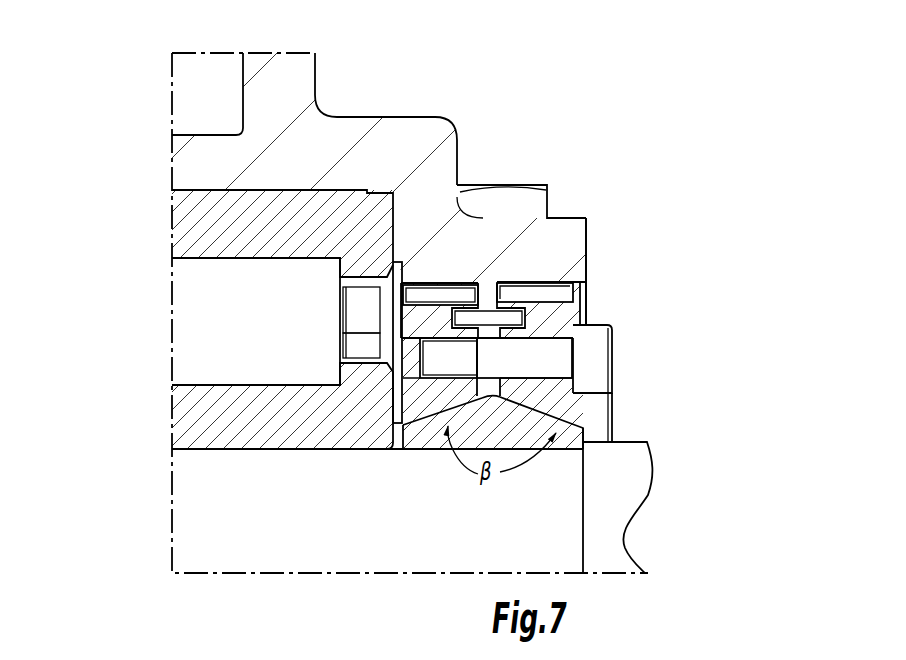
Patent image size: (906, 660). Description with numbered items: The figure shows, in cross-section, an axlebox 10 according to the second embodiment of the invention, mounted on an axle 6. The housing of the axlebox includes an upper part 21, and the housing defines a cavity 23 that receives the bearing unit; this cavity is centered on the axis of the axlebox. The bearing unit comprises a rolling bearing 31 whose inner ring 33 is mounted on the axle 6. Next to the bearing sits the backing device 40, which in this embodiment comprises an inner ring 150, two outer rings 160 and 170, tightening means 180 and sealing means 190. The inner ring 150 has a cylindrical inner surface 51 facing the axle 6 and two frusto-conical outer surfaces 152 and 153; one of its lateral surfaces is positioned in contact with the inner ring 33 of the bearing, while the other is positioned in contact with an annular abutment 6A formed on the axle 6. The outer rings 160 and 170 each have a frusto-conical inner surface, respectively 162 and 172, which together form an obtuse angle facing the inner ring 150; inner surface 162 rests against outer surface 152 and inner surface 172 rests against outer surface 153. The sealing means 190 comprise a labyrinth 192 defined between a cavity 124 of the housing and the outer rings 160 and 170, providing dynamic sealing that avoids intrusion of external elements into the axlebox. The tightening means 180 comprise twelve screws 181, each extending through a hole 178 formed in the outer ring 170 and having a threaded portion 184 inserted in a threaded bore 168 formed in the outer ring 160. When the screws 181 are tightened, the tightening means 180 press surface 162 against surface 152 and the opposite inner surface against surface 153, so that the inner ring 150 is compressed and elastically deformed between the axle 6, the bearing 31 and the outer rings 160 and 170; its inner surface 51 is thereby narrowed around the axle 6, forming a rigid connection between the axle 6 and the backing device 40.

The axlebox 10 is at (146, 100).
The upper part 21 is at (303, 112).
The cavity 23 is at (212, 196).
The rolling bearing 31 is at (148, 300).
The inner ring 33 is at (195, 410).
The backing device 40 is at (697, 281).
The cavity 124 is at (421, 290).
The inner ring 150 is at (408, 433).
The frusto-conical outer surface 152 is at (430, 401).
The frusto-conical outer surface 153 is at (574, 393).
The outer ring 160 is at (462, 295).
The frusto-conical inner surface 162 is at (421, 428).
The threaded bore 168 is at (403, 358).
The outer ring 170 is at (575, 300).
The frusto-conical inner surface 172 is at (527, 425).
The hole 178 is at (525, 345).
The tightening means 180 is at (636, 353).
The screw 181 is at (629, 388).
The threaded portion 184 is at (452, 353).
The sealing means 190 is at (598, 272).
The labyrinth 192 is at (506, 292).
The cylindrical inner surface 51 is at (561, 455).
The axle 6 is at (387, 500).
The abutment 6A is at (620, 463).